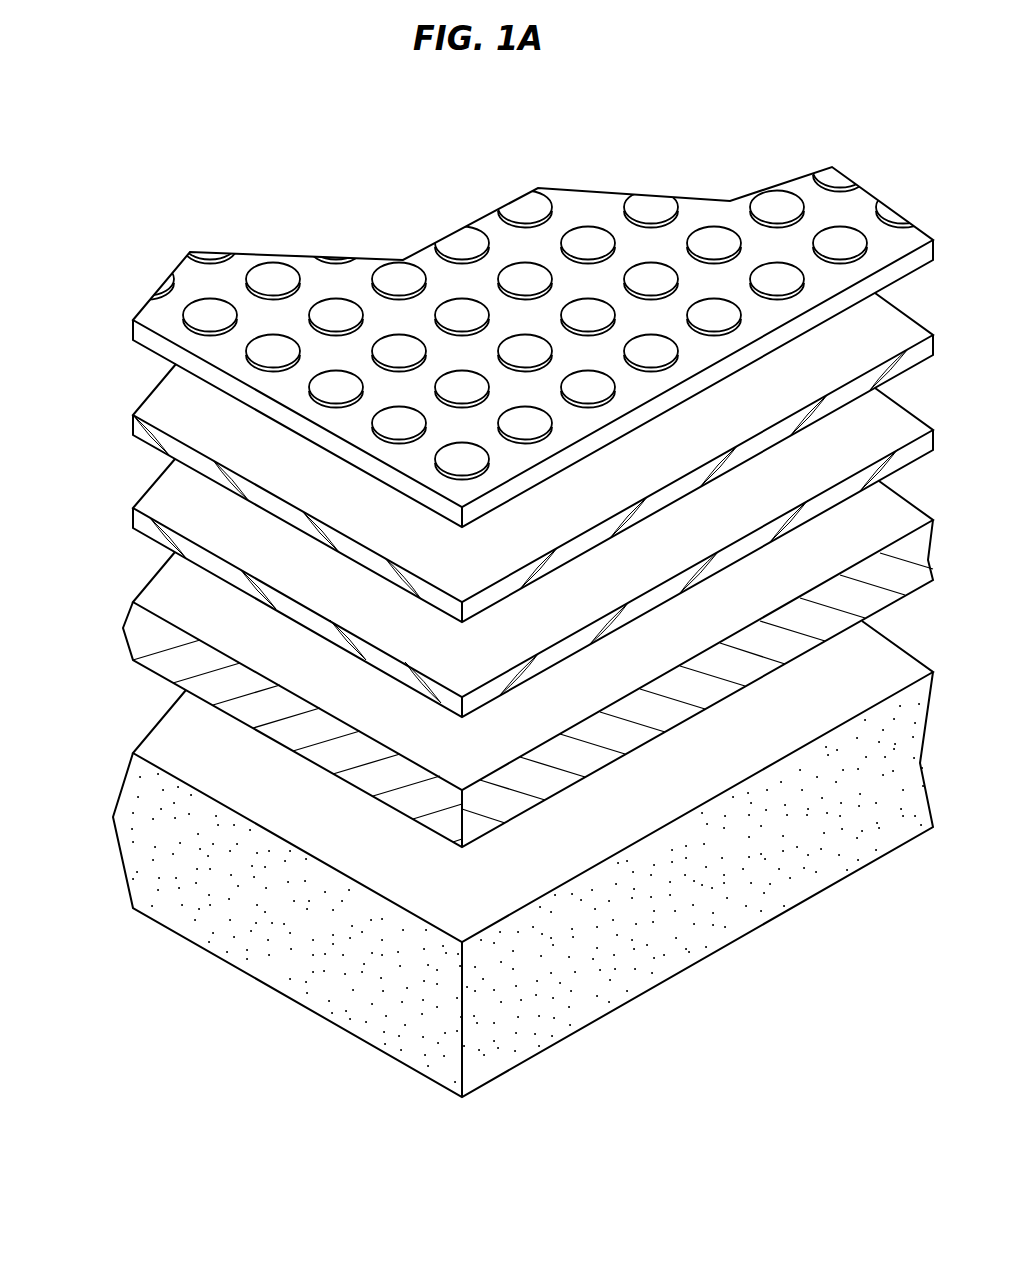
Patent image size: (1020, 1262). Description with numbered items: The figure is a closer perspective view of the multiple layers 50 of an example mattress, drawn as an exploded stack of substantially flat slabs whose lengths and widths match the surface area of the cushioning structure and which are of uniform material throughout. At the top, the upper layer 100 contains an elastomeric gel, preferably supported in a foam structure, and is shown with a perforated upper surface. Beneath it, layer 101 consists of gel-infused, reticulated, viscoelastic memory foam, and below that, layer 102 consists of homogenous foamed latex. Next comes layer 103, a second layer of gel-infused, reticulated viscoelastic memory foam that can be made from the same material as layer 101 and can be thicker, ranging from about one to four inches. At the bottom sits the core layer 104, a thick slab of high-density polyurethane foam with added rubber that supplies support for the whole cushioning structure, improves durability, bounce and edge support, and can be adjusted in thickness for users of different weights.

The multiple layers 50 is at (260, 138).
The upper layer 100 is at (133, 323).
The layer 101 is at (133, 418).
The layer 102 is at (133, 512).
The second layer of gel-infused, reticulated viscoelastic memory foam 103 is at (133, 645).
The core layer 104 is at (150, 793).